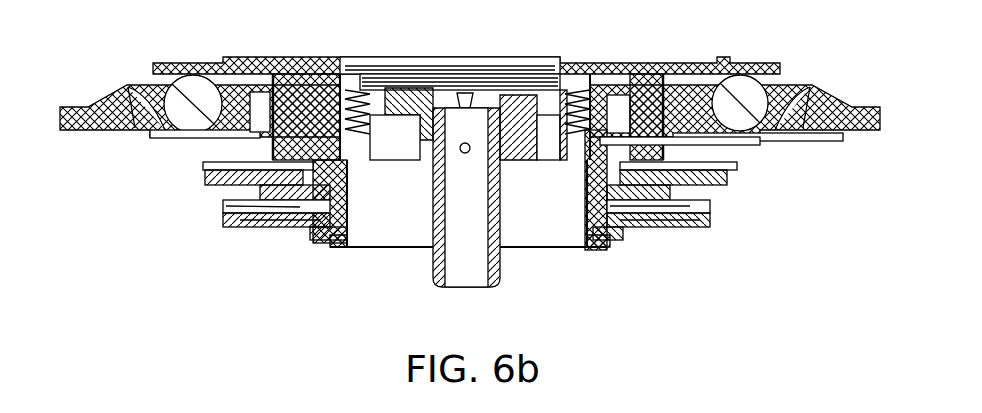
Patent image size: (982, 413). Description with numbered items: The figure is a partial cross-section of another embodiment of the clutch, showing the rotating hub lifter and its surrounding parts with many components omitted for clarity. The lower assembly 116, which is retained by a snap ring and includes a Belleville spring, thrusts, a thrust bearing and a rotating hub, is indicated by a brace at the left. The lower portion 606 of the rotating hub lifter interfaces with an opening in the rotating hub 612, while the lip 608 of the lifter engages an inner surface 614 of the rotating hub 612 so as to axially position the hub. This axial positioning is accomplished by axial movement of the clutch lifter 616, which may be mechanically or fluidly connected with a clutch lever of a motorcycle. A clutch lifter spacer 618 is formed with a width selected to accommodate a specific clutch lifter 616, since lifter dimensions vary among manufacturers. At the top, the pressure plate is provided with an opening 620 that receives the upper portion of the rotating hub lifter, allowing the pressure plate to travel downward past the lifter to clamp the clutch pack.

The lower assembly 116 is at (167, 250).
The lower portion 606 is at (553, 137).
The lip 608 is at (362, 162).
The rotating hub 612 is at (345, 243).
The inner surface 614 is at (342, 116).
The clutch lifter 616 is at (503, 270).
The clutch lifter spacer 618 is at (520, 93).
The opening 620 is at (543, 45).